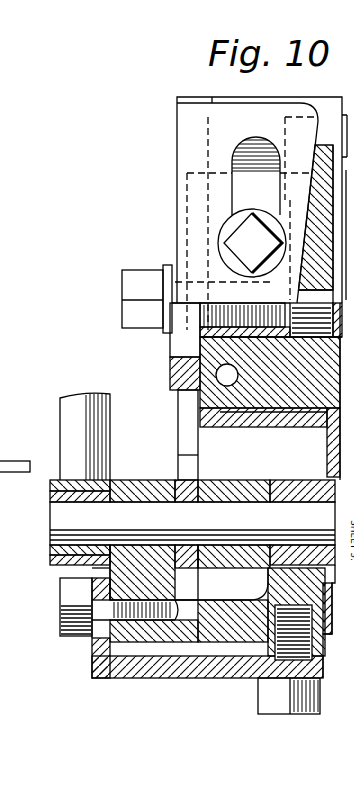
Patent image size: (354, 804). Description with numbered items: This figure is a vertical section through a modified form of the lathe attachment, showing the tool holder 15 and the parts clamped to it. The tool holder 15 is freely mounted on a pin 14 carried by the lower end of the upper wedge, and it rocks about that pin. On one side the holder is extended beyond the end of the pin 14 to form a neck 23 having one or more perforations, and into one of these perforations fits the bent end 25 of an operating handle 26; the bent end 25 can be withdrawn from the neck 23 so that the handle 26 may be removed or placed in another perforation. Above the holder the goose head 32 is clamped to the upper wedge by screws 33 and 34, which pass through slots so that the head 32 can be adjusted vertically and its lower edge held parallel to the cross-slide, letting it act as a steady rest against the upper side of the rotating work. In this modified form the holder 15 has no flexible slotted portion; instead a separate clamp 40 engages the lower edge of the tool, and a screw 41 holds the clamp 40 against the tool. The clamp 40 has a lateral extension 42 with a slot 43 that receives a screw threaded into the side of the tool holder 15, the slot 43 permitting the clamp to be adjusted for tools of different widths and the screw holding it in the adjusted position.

The goose head 32 is at (322, 193).
The screw 34 is at (234, 245).
The screw 33 is at (128, 313).
The operating handle 26 is at (112, 442).
The bent end 25 is at (52, 488).
The neck 23 is at (52, 498).
The clamp 40 is at (158, 672).
The screw 41 is at (270, 691).
The lateral extension 42 is at (88, 651).
The slot 43 is at (100, 629).
The pin 14 is at (62, 603).
The tool holder 15 is at (110, 574).